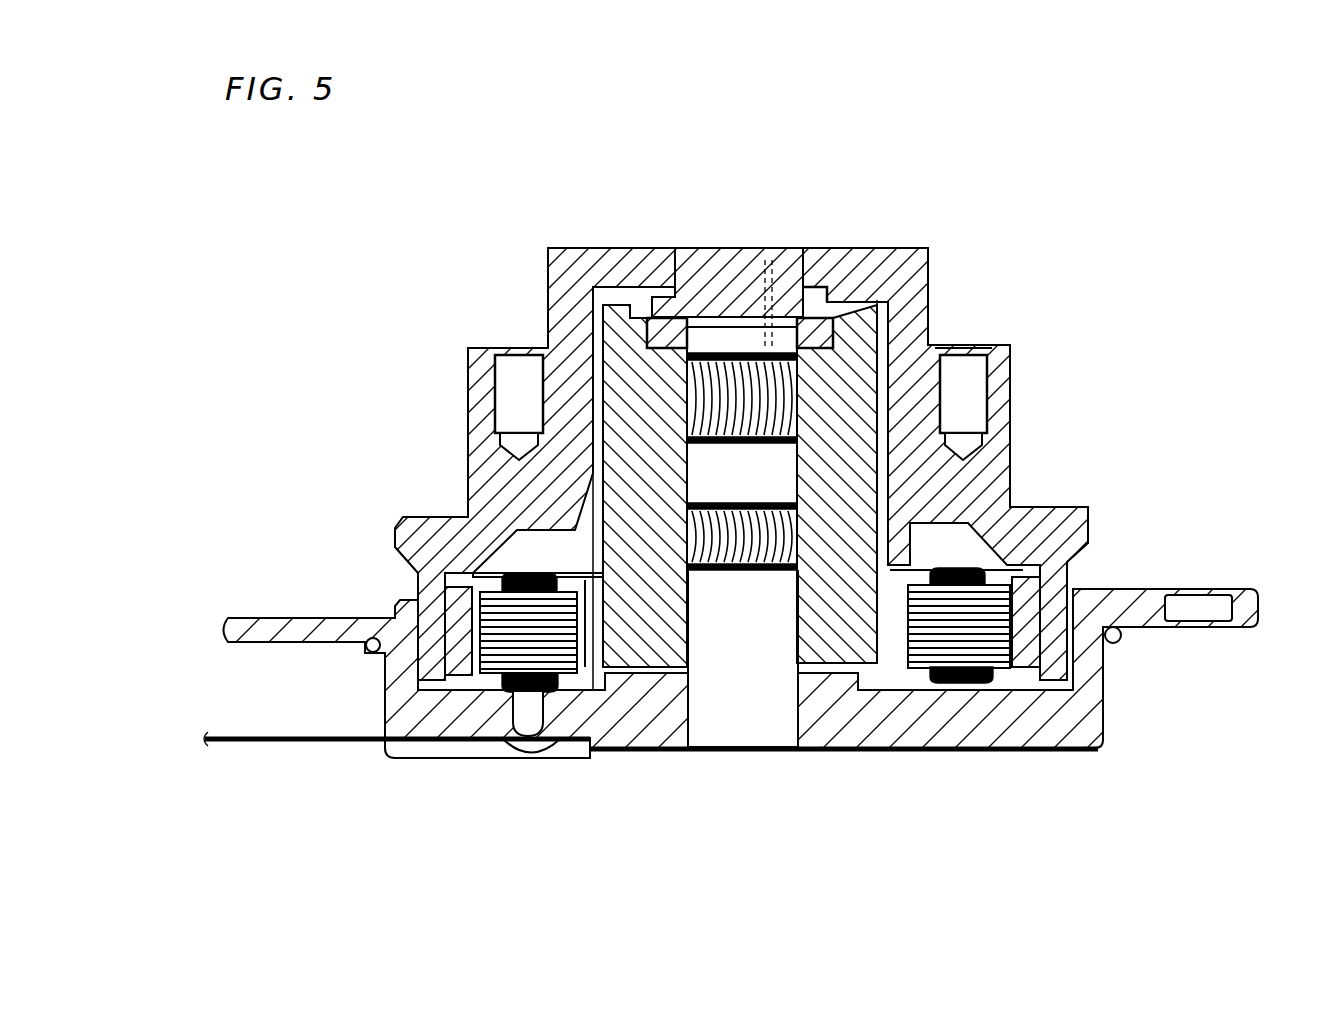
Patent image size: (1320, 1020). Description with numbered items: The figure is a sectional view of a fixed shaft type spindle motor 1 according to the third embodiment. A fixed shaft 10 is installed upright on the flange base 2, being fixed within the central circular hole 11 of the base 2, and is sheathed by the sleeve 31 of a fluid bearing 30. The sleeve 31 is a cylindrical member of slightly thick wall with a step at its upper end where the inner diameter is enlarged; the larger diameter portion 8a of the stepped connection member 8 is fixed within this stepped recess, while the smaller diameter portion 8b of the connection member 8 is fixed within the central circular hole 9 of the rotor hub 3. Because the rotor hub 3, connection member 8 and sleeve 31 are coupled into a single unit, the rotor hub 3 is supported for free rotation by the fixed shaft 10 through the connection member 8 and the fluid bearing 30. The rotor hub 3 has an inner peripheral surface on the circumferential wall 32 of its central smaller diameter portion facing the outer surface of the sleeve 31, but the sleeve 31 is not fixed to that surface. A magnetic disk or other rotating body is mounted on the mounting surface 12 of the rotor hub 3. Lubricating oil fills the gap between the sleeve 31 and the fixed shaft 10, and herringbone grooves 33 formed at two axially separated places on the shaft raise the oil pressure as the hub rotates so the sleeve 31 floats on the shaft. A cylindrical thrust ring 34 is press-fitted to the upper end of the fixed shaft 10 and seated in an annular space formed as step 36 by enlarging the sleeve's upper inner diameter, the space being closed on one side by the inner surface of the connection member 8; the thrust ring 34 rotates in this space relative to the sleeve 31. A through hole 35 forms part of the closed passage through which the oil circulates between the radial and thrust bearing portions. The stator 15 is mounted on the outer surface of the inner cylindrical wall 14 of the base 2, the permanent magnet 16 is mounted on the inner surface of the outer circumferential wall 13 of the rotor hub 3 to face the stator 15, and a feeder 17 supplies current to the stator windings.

The fixed shaft type spindle motor 1 is at (927, 160).
The flange base 2 is at (425, 772).
The rotor hub 3 is at (527, 220).
The connection member 8 is at (714, 224).
The larger diameter portion 8a is at (830, 293).
The smaller diameter portion 8b is at (765, 258).
The central circular hole 9 is at (692, 270).
The fixed shaft 10 is at (765, 715).
The central circular hole 11 is at (725, 705).
The mounting surface 12 is at (508, 356).
The outer circumferential wall 13 is at (430, 598).
The inner cylindrical wall 14 is at (592, 680).
The stator 15 is at (960, 662).
The permanent magnet 16 is at (1025, 652).
The feeder 17 is at (530, 750).
The fluid bearing 30 is at (892, 318).
The sleeve 31 is at (862, 466).
The circumferential wall 32 is at (553, 396).
The herringbone grooves 33 is at (716, 498).
The thrust ring 34 is at (900, 298).
The through hole 35 is at (789, 300).
The step 36 is at (646, 300).